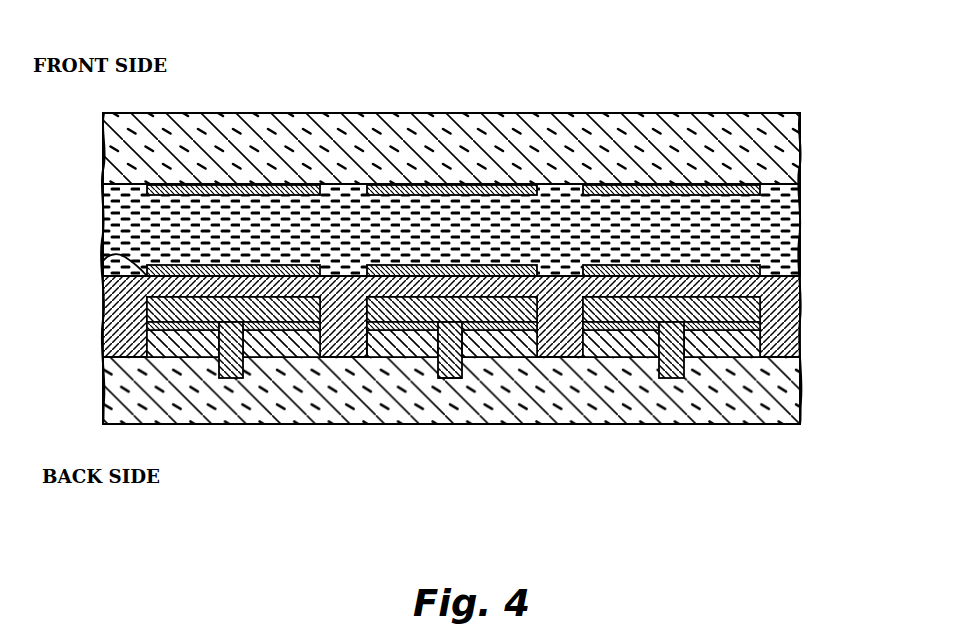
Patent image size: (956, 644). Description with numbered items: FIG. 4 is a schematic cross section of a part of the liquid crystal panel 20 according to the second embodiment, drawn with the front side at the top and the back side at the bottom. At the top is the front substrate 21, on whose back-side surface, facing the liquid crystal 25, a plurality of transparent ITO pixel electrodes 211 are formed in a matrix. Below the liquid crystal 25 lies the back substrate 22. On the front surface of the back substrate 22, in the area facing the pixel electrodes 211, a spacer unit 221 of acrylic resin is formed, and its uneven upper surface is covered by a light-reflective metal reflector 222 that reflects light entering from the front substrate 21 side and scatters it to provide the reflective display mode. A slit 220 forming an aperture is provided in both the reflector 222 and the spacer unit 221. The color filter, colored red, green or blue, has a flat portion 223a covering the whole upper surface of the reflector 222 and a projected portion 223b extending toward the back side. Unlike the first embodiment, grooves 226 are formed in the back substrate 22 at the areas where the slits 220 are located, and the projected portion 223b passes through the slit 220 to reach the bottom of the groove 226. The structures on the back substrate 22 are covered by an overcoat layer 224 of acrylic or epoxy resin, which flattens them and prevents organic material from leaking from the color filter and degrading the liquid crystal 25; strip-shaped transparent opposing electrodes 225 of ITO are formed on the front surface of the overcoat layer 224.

The liquid crystal panel 20 is at (724, 79).
The front substrate 21 is at (802, 143).
The back substrate 22 is at (798, 390).
The liquid crystal 25 is at (800, 194).
The pixel electrodes 211 is at (434, 186).
The slit 220 is at (447, 383).
The spacer unit 221 is at (377, 358).
The reflector 222 is at (344, 278).
The flat portion 223a is at (514, 275).
The projected portion 223b is at (475, 360).
The overcoat layer 224 is at (801, 266).
The opposing electrodes 225 is at (90, 258).
The groove 226 is at (458, 380).